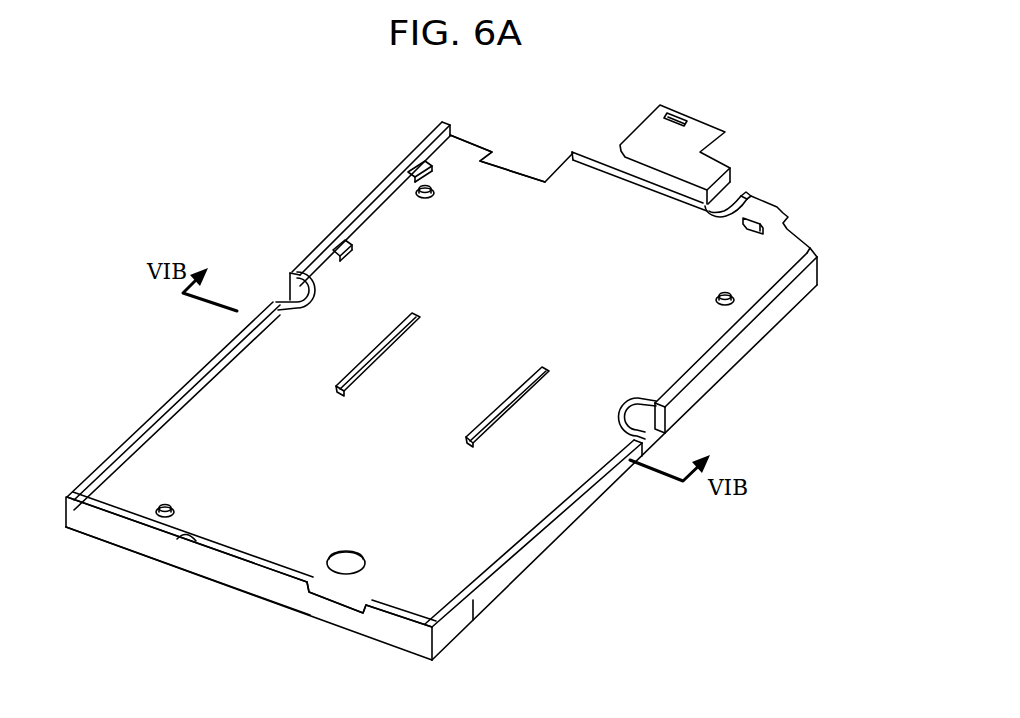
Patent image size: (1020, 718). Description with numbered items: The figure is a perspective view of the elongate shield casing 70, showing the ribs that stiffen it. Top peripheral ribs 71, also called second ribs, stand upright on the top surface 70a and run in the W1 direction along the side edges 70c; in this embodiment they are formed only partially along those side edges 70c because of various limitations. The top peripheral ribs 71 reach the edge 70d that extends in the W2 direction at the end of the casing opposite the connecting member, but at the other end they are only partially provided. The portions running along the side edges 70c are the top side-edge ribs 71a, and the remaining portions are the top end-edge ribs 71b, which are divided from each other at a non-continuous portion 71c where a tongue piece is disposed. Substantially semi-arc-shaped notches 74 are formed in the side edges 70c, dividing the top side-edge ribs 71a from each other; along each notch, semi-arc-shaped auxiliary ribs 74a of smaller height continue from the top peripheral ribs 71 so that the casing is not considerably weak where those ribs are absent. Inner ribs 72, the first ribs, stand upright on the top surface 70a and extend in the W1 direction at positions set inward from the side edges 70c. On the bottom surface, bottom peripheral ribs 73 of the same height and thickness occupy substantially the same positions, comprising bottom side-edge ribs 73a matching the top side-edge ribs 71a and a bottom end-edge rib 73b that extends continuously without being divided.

The shield casing 70 is at (336, 167).
The top surface 70a is at (508, 186).
The side edges 70c is at (401, 190).
The edge 70d is at (401, 606).
The top peripheral ribs 71 is at (147, 417).
The top side-edge ribs 71a is at (713, 355).
The top end-edge ribs 71b is at (597, 153).
The non-continuous portion 71c is at (333, 600).
The inner ribs 72 is at (530, 370).
The bottom peripheral ribs 73 is at (354, 564).
The bottom side-edge ribs 73a is at (458, 637).
The bottom end-edge rib 73b is at (260, 598).
The notches 74 is at (285, 292).
The auxiliary ribs 74a is at (312, 282).